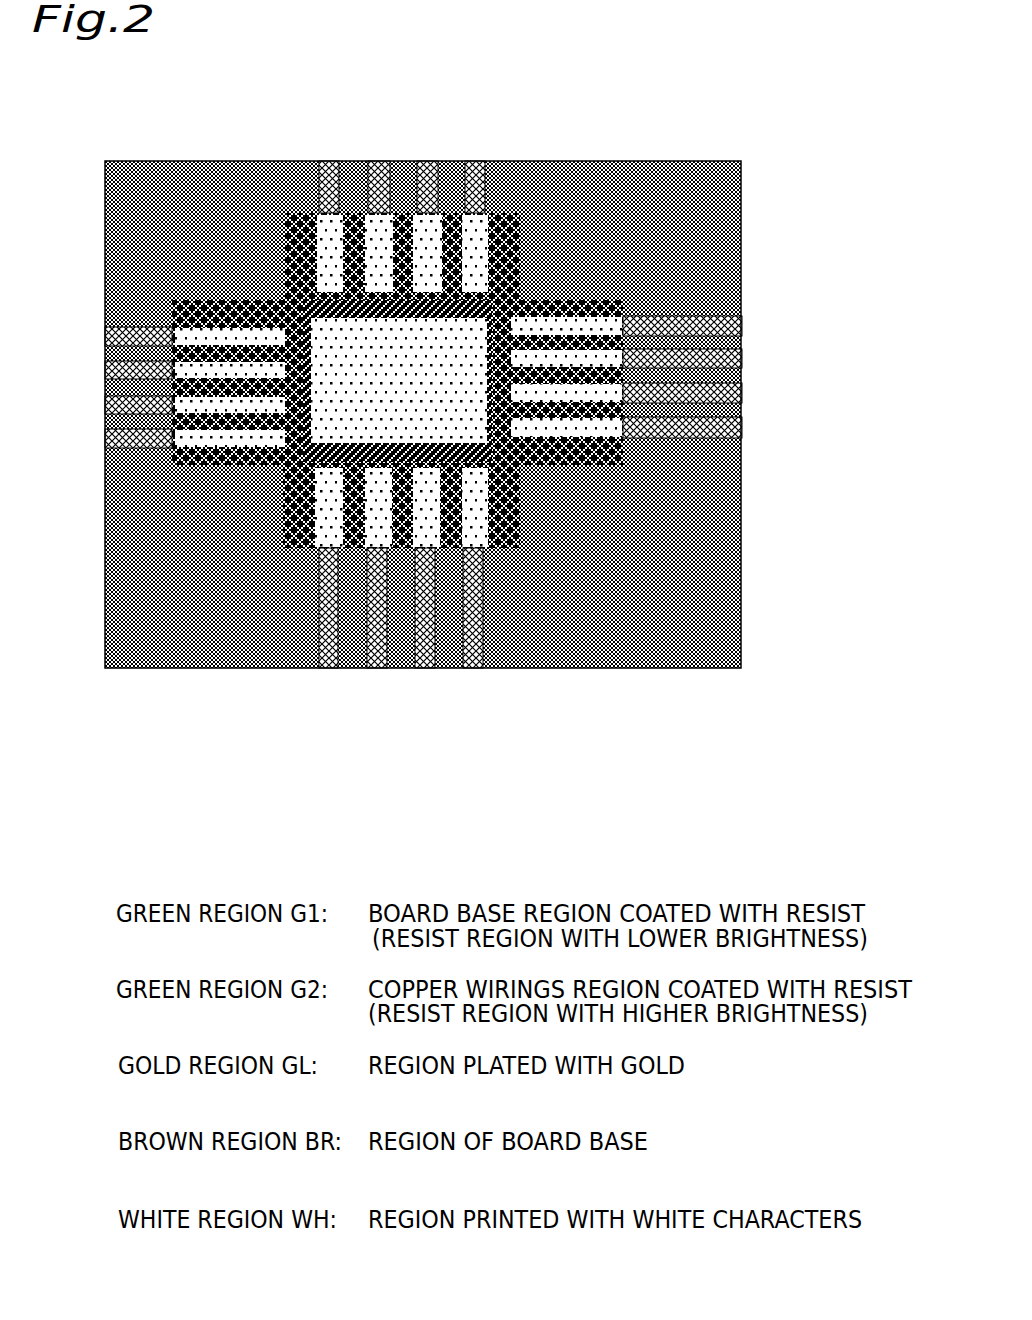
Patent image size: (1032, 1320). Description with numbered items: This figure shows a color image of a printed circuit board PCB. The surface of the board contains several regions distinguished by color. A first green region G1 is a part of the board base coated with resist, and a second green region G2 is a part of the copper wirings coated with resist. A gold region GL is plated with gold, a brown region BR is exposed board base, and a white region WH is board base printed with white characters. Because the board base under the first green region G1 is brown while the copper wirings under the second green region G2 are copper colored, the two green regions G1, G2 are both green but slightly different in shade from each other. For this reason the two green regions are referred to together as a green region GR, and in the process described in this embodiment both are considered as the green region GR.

The printed circuit board PCB is at (220, 162).
The first green region G1 is at (568, 203).
The second green region G2 is at (147, 442).
The gold region GL is at (407, 407).
The brown region BR is at (530, 455).
The white region WH is at (658, 597).
The green region GR is at (107, 888).